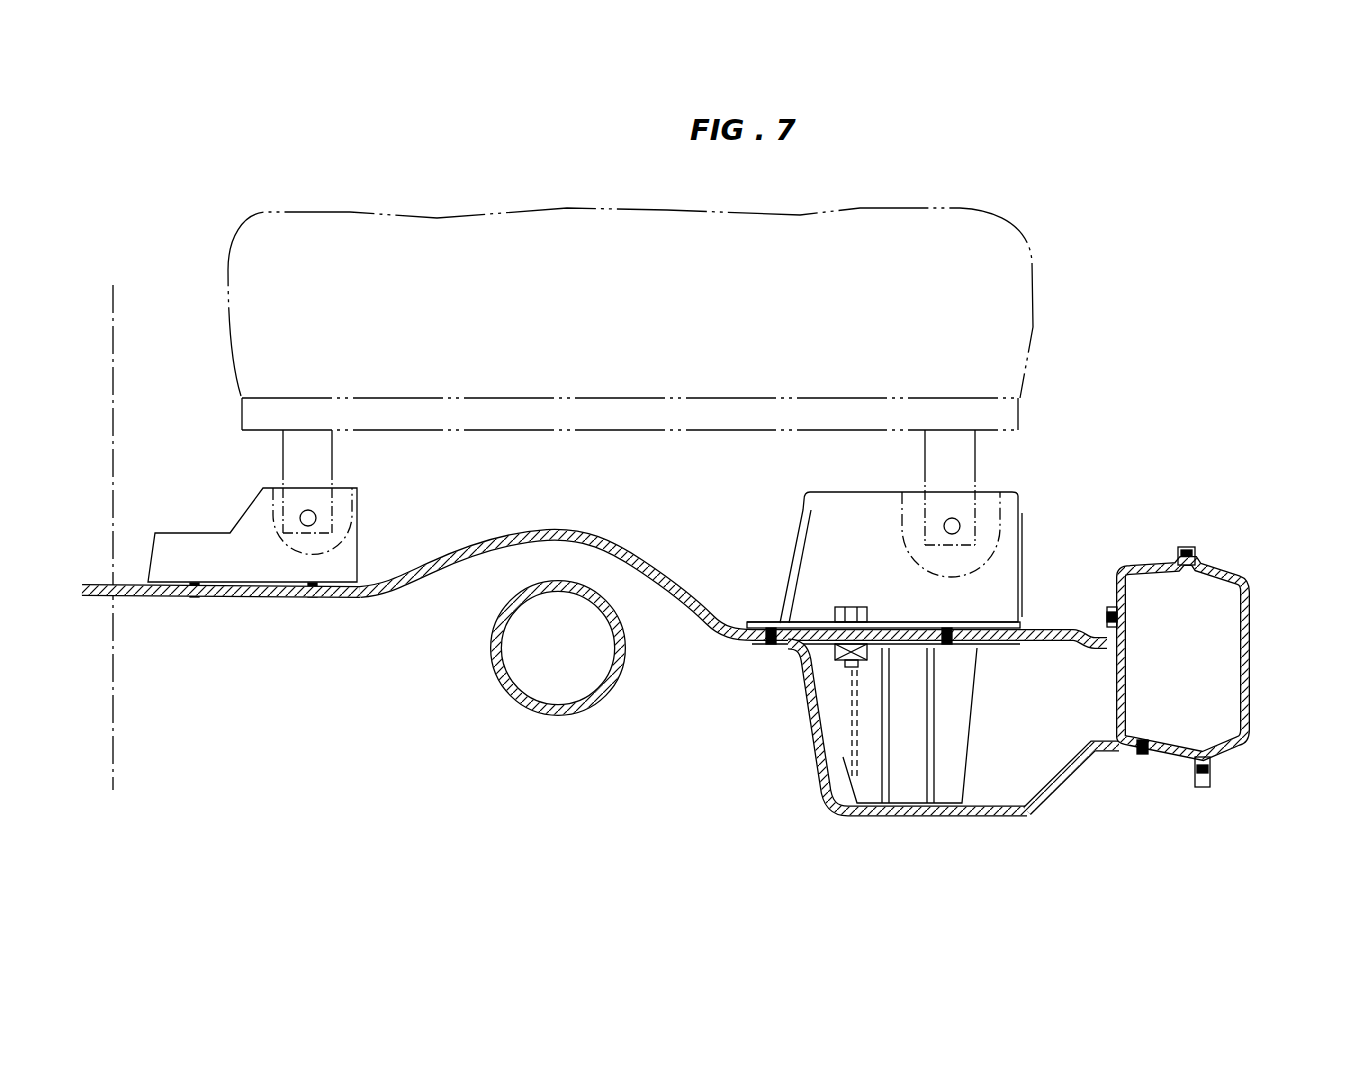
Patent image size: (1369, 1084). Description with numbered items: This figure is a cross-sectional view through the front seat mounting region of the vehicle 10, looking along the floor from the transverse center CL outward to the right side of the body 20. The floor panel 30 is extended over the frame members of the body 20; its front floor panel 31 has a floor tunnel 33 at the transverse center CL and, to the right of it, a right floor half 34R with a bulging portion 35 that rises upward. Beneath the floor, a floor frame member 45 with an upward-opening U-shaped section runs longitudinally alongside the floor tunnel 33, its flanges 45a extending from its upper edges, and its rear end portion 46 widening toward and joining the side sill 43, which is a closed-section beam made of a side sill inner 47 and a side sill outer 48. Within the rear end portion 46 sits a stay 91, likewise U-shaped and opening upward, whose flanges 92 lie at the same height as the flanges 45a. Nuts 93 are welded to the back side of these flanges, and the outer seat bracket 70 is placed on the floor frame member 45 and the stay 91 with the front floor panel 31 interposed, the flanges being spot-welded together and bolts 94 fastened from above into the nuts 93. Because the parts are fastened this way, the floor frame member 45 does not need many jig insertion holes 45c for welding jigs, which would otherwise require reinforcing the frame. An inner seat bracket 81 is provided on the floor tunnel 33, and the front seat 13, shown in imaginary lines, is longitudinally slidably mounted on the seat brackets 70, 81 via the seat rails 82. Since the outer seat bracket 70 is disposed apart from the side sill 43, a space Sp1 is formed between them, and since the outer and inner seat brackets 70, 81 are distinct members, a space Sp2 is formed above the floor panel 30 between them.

The vehicle 10 is at (202, 187).
The front seat 13 is at (1033, 297).
The body 20 is at (1222, 725).
The floor panel 30 is at (667, 598).
The front floor panel 31 is at (1074, 622).
The floor tunnel 33 is at (236, 600).
The right floor half 34R is at (1002, 553).
The bulging portion 35 is at (538, 534).
The side sill 43 is at (1195, 736).
The floor frame member 45 is at (935, 802).
The flange 45a is at (769, 645).
The jig insertion hole 45c is at (963, 818).
The rear end portion 46 is at (1065, 783).
The side sill inner 47 is at (1170, 758).
The side sill outer 48 is at (1238, 752).
The outer seat bracket 70 is at (1032, 516).
The inner seat bracket 81 is at (344, 570).
The seat rail 82 is at (283, 443).
The stay 91 is at (868, 749).
The flange 92 is at (842, 648).
The nut 93 is at (840, 682).
The bolt 94 is at (849, 606).
The transverse center CL is at (113, 348).
The space Sp1 is at (1080, 603).
The space Sp2 is at (448, 503).